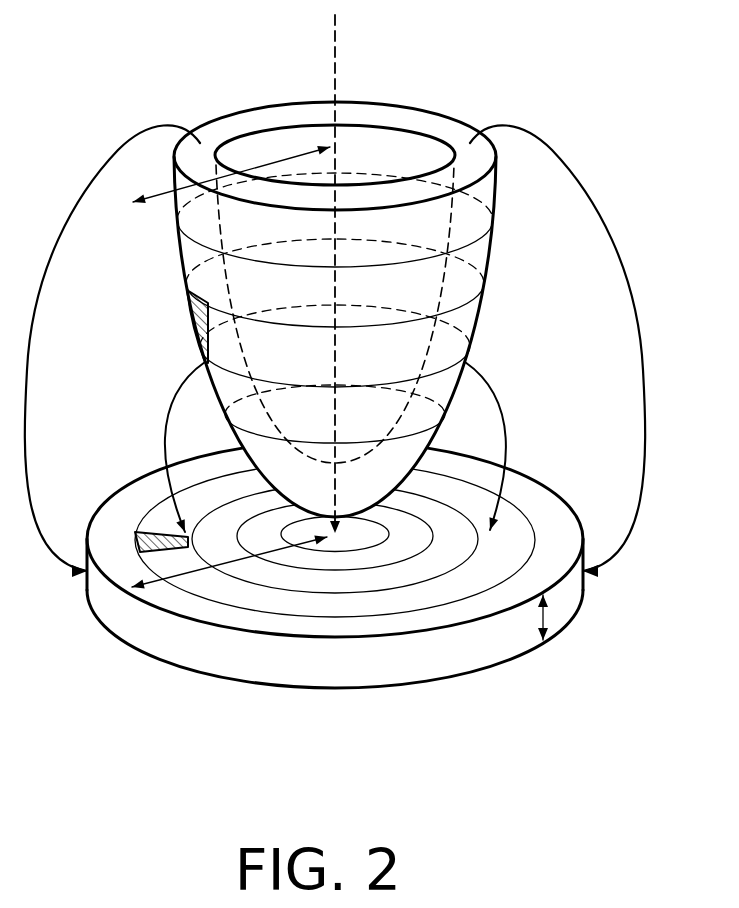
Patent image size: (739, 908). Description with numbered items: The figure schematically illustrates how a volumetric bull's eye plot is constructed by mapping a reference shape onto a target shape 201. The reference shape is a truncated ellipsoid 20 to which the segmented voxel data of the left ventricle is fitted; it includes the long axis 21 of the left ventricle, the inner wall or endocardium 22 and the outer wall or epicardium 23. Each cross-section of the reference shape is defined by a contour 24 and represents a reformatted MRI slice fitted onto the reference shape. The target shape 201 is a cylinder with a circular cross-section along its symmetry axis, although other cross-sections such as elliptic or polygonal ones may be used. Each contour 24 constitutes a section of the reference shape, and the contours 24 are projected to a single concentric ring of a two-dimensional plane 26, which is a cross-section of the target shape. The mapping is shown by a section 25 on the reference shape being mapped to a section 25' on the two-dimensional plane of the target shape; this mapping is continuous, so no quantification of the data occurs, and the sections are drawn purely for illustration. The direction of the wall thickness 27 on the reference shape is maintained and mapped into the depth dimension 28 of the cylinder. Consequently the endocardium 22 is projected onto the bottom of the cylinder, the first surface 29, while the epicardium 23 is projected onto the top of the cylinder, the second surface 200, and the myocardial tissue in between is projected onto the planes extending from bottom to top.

The truncated ellipsoid 20 is at (497, 192).
The long axis 21 is at (337, 50).
The inner wall or endocardium 22 is at (412, 128).
The outer wall or epicardium 23 is at (290, 103).
The contour 24 is at (468, 336).
The section 25 is at (169, 326).
The section 25' is at (139, 484).
The 2D plane 26 is at (185, 575).
The wall thickness direction 27 is at (163, 200).
The depth dimension of the cylinder 28 is at (548, 616).
The first surface 29 is at (405, 712).
The second surface 200 is at (525, 490).
The target shape 201 is at (125, 613).